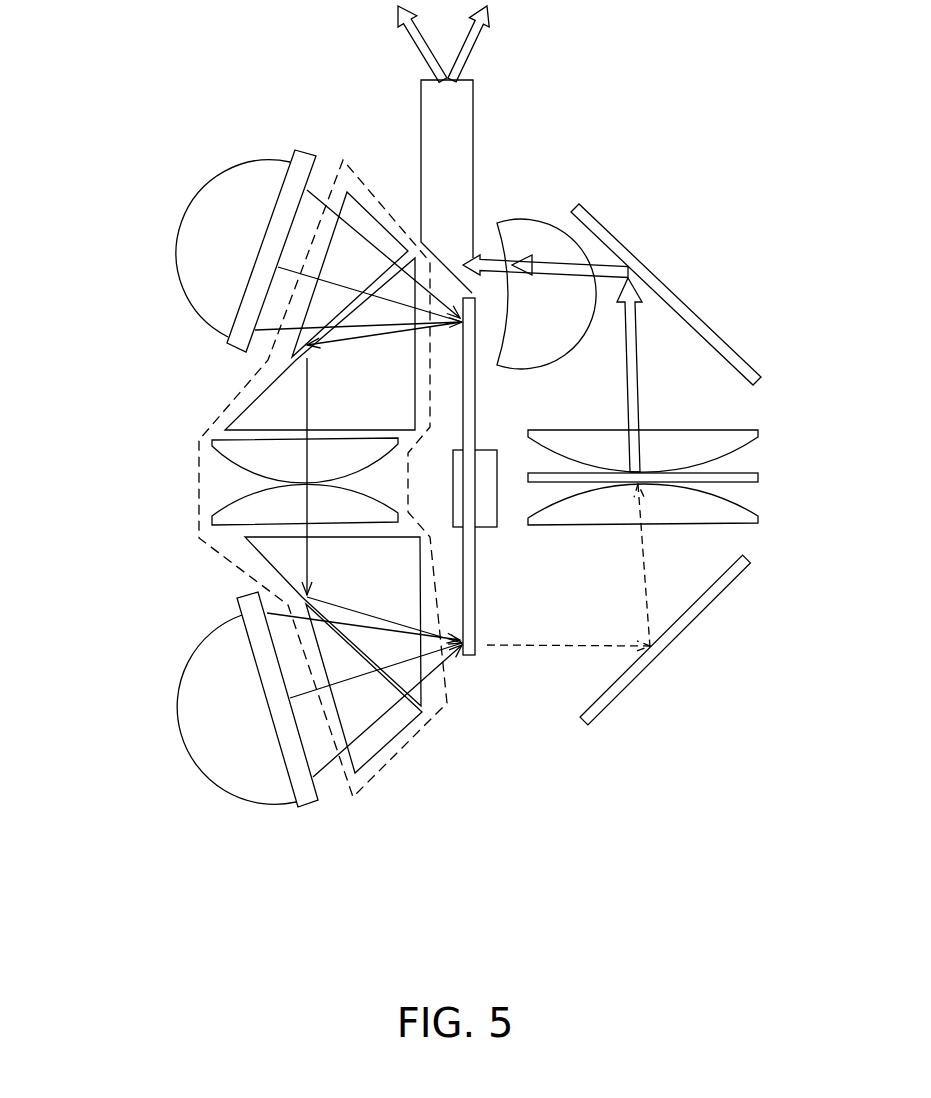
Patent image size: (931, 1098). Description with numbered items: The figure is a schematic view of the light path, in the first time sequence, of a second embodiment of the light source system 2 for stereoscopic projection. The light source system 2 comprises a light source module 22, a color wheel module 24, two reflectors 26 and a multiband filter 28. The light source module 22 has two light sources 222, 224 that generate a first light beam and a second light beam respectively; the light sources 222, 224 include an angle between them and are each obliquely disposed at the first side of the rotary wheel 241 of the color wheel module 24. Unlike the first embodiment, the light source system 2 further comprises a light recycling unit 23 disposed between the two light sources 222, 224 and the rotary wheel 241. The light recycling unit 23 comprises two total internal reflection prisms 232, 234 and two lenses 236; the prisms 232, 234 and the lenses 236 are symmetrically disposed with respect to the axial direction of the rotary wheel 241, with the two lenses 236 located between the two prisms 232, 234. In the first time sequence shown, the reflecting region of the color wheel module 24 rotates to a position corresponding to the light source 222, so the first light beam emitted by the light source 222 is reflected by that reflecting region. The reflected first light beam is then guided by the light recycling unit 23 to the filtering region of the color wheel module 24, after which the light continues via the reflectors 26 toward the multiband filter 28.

The light source system for stereoscopic projection 2 is at (214, 40).
The light source module 22 is at (87, 233).
The light source 222 is at (174, 235).
The light source 224 is at (173, 709).
The lenses 236 is at (235, 456).
The light recycling unit 23 is at (366, 795).
The total internal reflection prism 232 is at (390, 725).
The total internal reflection prism 234 is at (388, 285).
The color wheel module 24 is at (470, 296).
The rotary wheel 241 is at (469, 476).
The reflectors 26 is at (772, 235).
The multiband filter 28 is at (538, 477).